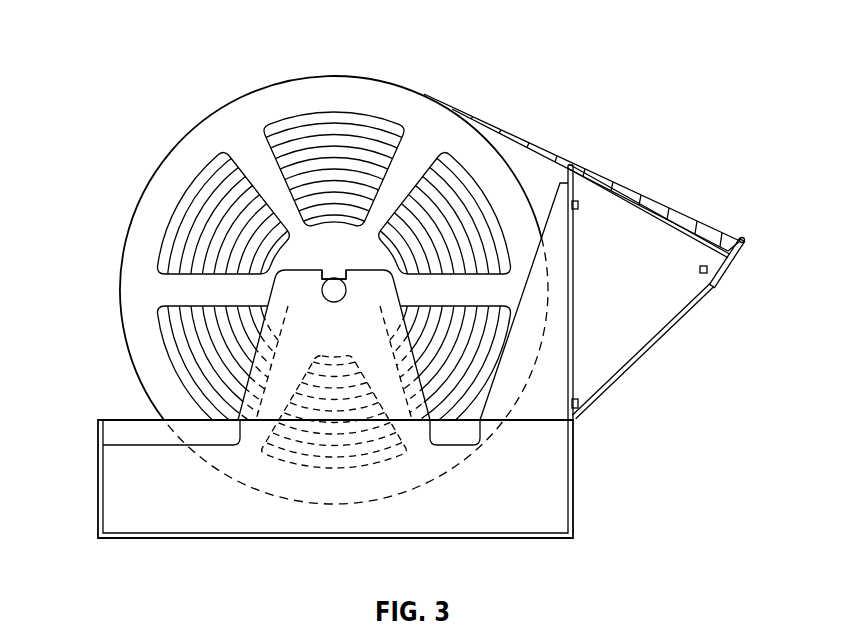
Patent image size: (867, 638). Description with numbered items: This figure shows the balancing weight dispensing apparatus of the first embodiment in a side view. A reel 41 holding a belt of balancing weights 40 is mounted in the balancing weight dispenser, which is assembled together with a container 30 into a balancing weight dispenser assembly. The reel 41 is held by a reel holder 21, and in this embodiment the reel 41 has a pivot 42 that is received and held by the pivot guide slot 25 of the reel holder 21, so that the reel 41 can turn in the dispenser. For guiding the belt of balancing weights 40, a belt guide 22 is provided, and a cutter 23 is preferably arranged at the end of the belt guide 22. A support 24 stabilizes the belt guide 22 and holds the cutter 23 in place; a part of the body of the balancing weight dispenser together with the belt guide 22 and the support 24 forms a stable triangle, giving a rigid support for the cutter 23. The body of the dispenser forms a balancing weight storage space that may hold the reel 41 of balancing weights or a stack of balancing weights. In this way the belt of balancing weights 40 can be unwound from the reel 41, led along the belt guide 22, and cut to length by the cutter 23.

The reel 41 is at (340, 95).
The reel holder 21 is at (293, 295).
The pivot 42 is at (323, 299).
The pivot guide slot 25 is at (337, 302).
The container 30 is at (528, 483).
The belt of balancing weights 40 is at (660, 197).
The belt guide 22 is at (640, 207).
The cutter 23 is at (746, 247).
The support 24 is at (660, 340).